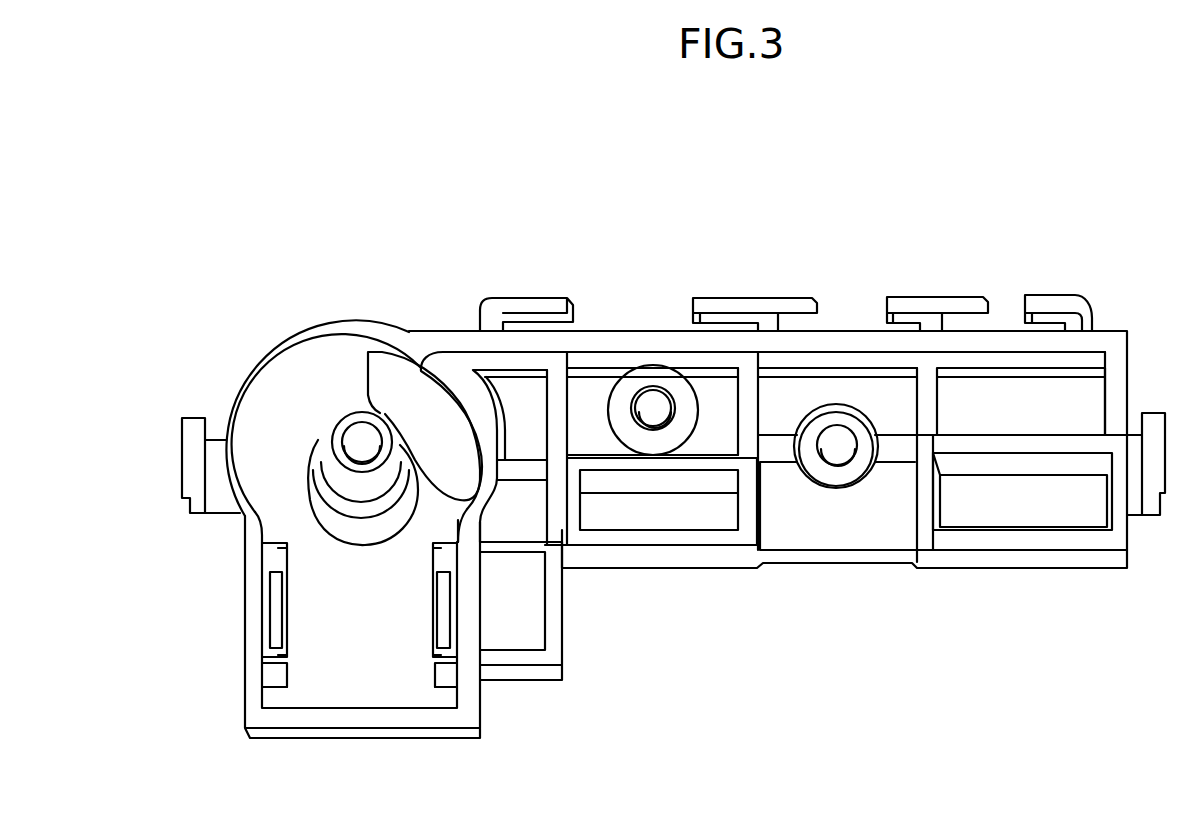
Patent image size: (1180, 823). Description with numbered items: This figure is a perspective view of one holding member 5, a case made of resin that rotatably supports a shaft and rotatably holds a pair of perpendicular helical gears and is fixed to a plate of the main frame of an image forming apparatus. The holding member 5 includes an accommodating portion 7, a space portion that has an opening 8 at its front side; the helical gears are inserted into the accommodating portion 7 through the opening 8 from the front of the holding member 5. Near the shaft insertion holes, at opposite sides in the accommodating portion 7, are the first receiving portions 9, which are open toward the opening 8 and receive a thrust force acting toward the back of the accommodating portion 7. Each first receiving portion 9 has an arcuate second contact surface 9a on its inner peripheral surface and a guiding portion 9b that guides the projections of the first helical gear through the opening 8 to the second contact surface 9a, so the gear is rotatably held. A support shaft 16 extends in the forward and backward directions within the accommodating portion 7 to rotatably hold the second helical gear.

The holding member 5 is at (635, 257).
The accommodating portion 7 is at (351, 687).
The opening 8 is at (395, 380).
The first receiving portion 9 is at (282, 697).
The second contact surface 9a is at (277, 603).
The guiding portion 9b is at (281, 656).
The support shaft 16 is at (362, 435).